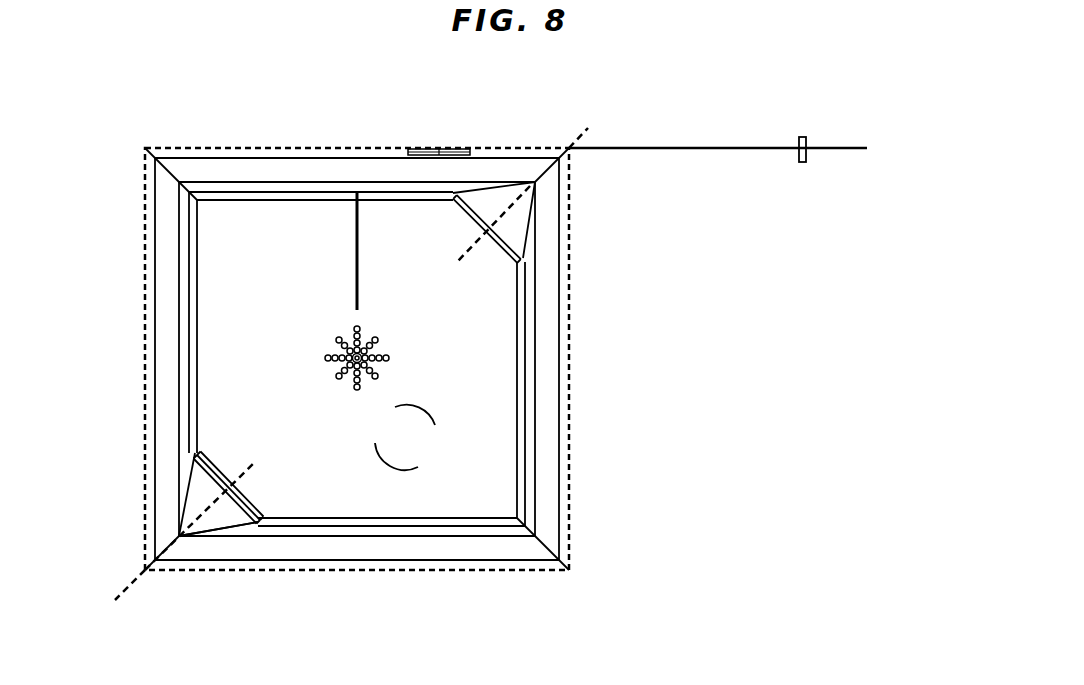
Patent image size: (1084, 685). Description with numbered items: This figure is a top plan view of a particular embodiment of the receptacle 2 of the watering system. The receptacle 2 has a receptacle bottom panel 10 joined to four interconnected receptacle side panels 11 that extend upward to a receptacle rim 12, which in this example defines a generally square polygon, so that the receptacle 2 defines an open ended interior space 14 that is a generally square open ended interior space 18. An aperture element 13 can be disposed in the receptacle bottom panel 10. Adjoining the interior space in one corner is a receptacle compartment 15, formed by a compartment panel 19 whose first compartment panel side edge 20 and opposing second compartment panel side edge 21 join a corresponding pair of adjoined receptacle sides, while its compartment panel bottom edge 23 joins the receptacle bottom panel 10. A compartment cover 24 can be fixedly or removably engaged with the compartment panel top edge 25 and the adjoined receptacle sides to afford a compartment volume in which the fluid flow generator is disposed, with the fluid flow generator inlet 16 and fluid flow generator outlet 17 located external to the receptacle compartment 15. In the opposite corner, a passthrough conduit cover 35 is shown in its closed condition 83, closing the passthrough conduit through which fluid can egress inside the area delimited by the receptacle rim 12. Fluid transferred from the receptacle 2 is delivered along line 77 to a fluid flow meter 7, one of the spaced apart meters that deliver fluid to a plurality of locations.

The receptacle 2 is at (603, 337).
The fluid flow meter 7 is at (807, 135).
The light beam 77 is at (680, 149).
The receptacle bottom panel 10 is at (145, 570).
The receptacle side panel 11 is at (300, 197).
The receptacle rim 12 is at (228, 172).
The aperture element 13 is at (370, 365).
The open ended interior space 14 is at (405, 437).
The generally square open ended interior space 18 is at (405, 437).
The receptacle compartment 15 is at (208, 522).
The fluid flow generator inlet 16 is at (218, 420).
The fluid flow generator outlet 17 is at (415, 222).
The compartment panel 19 is at (237, 488).
The first compartment panel side edge 20 is at (265, 522).
The second compartment panel side edge 21 is at (195, 453).
The compartment panel bottom edge 23 is at (255, 507).
The compartment cover 24 is at (228, 520).
The compartment panel top edge 25 is at (198, 470).
The passthrough conduit cover 35 is at (519, 234).
The closed condition 83 is at (554, 229).